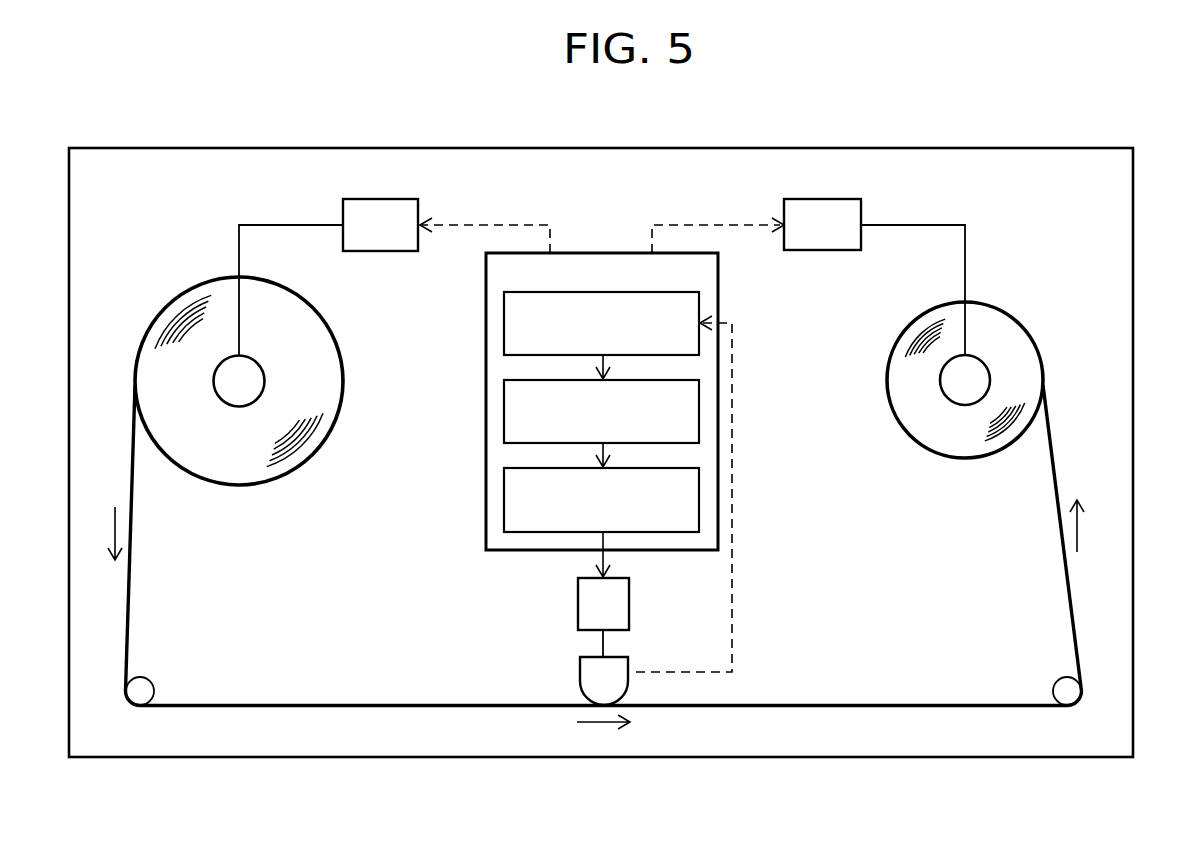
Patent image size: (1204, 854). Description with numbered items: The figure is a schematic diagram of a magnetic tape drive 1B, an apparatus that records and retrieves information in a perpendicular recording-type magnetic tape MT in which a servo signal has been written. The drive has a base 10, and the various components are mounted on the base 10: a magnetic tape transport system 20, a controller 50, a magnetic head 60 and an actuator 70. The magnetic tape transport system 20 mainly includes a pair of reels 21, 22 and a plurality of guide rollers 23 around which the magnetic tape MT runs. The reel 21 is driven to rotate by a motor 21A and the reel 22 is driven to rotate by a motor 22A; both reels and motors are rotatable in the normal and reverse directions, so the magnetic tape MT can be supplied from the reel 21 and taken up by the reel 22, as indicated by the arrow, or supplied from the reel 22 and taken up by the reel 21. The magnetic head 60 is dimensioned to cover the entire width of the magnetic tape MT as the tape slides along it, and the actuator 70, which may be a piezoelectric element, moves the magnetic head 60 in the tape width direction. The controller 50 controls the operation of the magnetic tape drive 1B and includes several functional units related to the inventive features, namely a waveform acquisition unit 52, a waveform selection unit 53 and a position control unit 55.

The magnetic tape drive 1B is at (920, 108).
The base 10 is at (677, 147).
The magnetic tape transport system 20 is at (1064, 301).
The reel 21 is at (261, 376).
The motor 21A is at (394, 253).
The reel 22 is at (952, 379).
The motor 22A is at (831, 253).
The guide rollers 23 is at (143, 683).
The controller 50 is at (602, 438).
The waveform acquisition unit 52 is at (504, 325).
The waveform selection unit 53 is at (504, 413).
The position control unit 55 is at (504, 502).
The magnetic head 60 is at (580, 669).
The actuator 70 is at (578, 596).
The magnetic tape MT is at (233, 477).